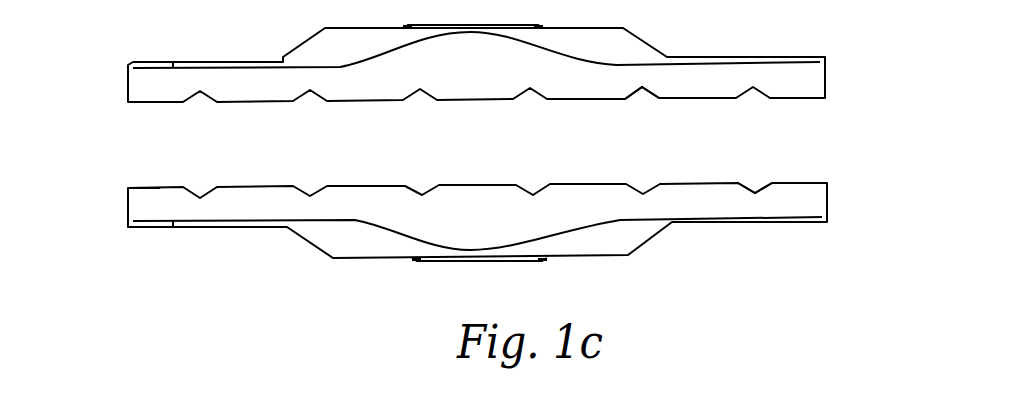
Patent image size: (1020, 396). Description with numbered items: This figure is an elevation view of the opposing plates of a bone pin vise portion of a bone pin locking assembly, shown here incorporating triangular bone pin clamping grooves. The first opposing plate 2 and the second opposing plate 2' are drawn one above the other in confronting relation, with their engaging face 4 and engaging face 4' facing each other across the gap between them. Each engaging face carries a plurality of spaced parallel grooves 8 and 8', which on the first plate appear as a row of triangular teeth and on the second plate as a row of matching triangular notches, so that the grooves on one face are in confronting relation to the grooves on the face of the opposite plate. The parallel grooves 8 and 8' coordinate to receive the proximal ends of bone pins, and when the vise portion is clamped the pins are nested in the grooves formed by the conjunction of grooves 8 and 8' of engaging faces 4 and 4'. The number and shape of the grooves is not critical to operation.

The first opposing plate 2 is at (520, 63).
The engaging face 4 is at (104, 112).
The spaced parallel grooves 8 is at (617, 115).
The second opposing plate 2' is at (527, 222).
The engaging face 4' is at (107, 191).
The spaced parallel grooves 8' is at (718, 166).